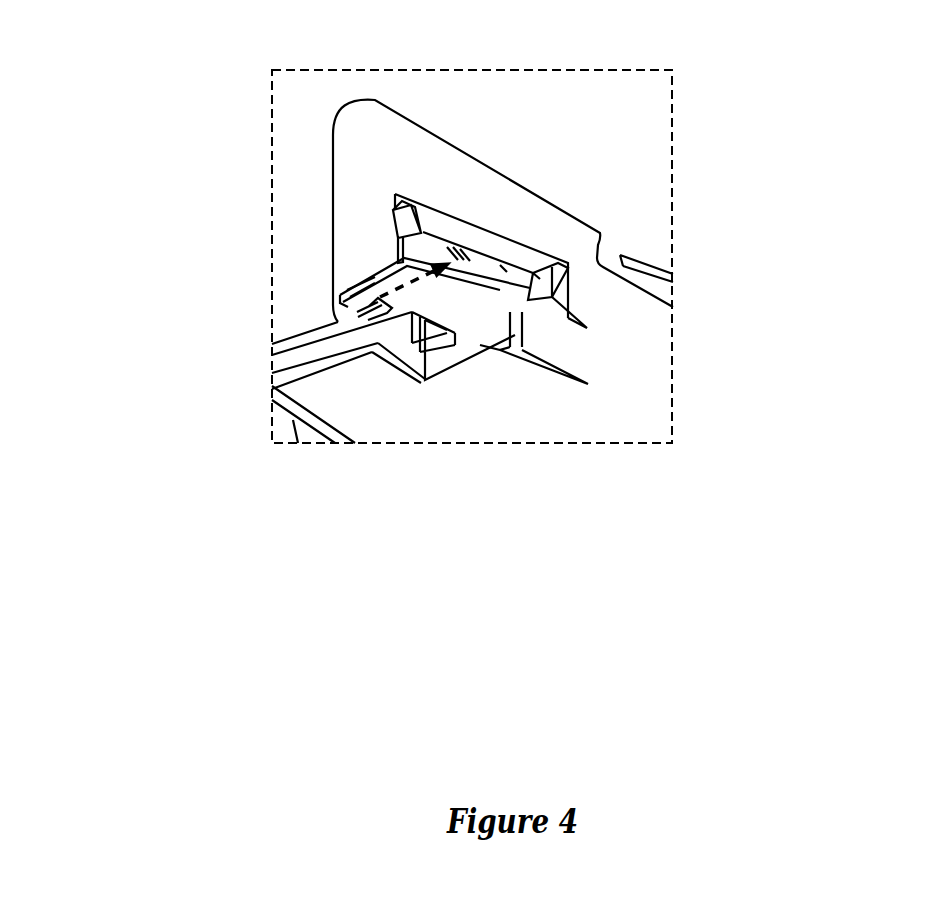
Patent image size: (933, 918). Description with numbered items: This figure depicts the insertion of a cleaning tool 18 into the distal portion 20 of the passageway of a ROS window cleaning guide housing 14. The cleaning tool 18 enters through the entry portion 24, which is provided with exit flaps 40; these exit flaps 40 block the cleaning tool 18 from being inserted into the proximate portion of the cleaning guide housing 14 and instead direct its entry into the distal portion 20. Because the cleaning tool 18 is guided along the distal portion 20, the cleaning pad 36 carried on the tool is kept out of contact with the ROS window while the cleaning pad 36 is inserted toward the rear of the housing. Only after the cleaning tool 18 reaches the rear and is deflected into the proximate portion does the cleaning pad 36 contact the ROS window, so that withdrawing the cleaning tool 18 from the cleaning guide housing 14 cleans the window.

The cleaning guide housing 14 is at (498, 230).
The entry portion 24 is at (392, 239).
The distal portion 20 is at (517, 311).
The exit flaps 40 is at (548, 342).
The cleaning pad 36 is at (452, 358).
The cleaning tool 18 is at (328, 382).